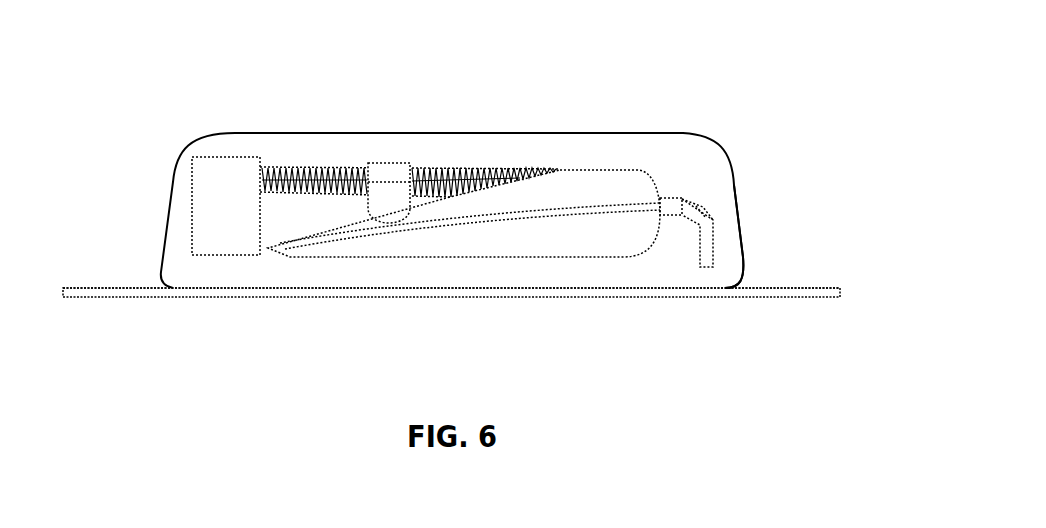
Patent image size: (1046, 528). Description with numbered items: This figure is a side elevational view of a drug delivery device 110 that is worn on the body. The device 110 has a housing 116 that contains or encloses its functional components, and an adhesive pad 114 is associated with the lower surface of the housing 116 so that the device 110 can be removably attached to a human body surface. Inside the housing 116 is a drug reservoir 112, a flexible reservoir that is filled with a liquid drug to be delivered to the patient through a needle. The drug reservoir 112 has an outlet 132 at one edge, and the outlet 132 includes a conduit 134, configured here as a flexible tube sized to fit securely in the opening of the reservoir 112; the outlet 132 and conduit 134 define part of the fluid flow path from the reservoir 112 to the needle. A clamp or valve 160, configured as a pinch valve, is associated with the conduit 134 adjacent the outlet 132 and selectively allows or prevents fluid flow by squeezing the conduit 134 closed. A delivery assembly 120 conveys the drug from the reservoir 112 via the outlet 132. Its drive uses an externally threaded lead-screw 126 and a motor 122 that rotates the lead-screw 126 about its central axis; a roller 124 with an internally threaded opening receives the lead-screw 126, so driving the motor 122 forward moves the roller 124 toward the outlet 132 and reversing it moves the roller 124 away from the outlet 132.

The drug delivery device 110 is at (473, 314).
The drug reservoir 112 is at (575, 235).
The adhesive pad 114 is at (840, 294).
The housing 116 is at (745, 258).
The delivery assembly 120 is at (178, 198).
The motor 122 is at (228, 157).
The roller 124 is at (398, 163).
The lead-screw 126 is at (317, 167).
The outlet 132 is at (670, 197).
The conduit 134 is at (713, 221).
The clamp or valve 160 is at (703, 207).